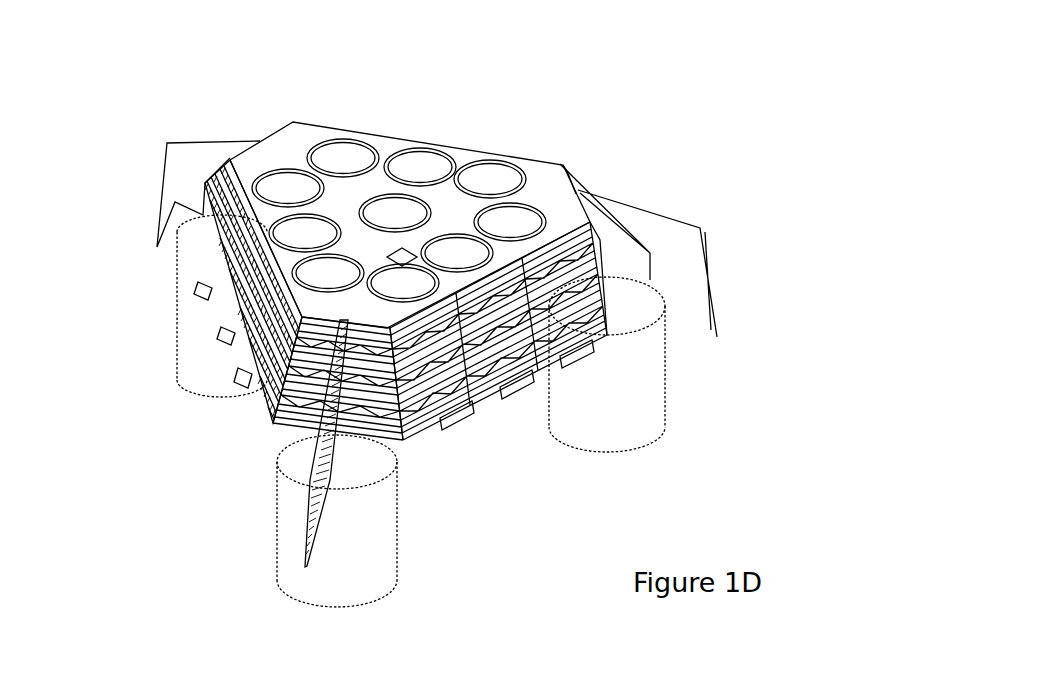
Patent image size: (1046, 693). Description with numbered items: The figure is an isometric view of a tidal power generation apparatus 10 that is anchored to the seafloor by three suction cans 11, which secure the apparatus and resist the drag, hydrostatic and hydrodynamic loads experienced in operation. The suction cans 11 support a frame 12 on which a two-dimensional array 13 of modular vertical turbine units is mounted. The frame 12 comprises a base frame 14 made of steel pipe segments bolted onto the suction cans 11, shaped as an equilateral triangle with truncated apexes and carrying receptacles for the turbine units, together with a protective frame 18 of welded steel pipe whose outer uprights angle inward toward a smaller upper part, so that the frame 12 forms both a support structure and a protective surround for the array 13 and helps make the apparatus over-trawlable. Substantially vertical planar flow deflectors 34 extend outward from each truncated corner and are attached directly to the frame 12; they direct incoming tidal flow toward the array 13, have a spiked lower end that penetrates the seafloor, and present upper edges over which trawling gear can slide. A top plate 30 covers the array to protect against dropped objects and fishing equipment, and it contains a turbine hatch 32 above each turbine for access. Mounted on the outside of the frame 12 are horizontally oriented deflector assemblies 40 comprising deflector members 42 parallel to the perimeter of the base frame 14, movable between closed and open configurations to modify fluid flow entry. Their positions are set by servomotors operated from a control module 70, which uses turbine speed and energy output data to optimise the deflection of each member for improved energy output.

The tidal power generation apparatus 10 is at (636, 162).
The suction cans 11 is at (180, 263).
The frame 12 is at (240, 397).
The two-dimensional array 13 is at (270, 180).
The base frame 14 is at (427, 437).
The protective frame 18 is at (549, 230).
The top plate 30 is at (460, 157).
The turbine hatch 32 is at (245, 315).
The flow deflectors 34 is at (680, 240).
The deflector assemblies 40 is at (640, 293).
The deflector members 42 is at (558, 355).
The control module 70 is at (400, 248).